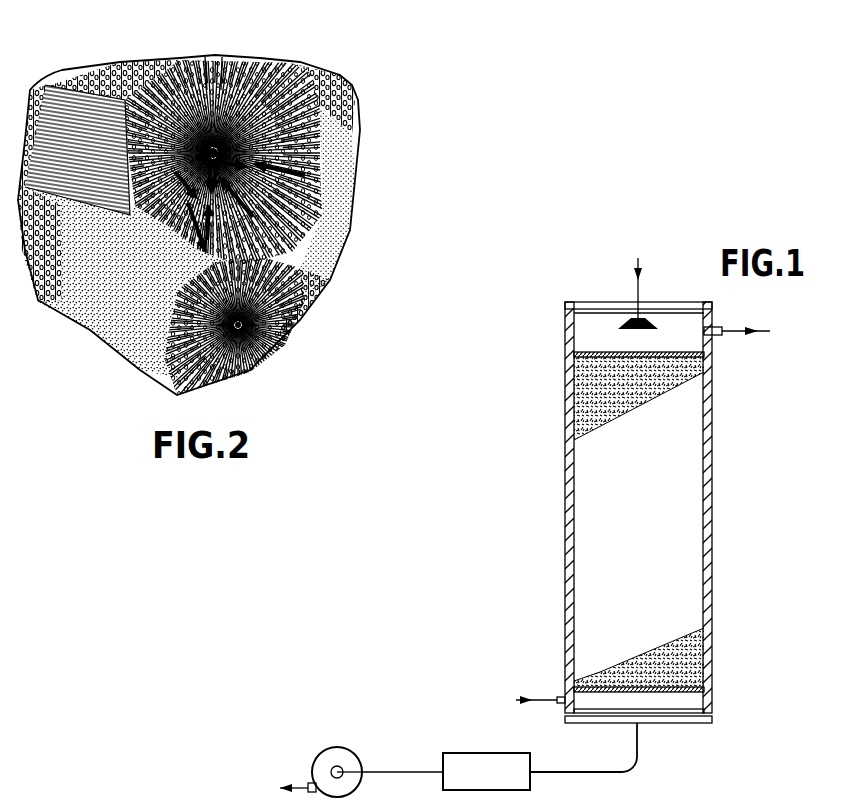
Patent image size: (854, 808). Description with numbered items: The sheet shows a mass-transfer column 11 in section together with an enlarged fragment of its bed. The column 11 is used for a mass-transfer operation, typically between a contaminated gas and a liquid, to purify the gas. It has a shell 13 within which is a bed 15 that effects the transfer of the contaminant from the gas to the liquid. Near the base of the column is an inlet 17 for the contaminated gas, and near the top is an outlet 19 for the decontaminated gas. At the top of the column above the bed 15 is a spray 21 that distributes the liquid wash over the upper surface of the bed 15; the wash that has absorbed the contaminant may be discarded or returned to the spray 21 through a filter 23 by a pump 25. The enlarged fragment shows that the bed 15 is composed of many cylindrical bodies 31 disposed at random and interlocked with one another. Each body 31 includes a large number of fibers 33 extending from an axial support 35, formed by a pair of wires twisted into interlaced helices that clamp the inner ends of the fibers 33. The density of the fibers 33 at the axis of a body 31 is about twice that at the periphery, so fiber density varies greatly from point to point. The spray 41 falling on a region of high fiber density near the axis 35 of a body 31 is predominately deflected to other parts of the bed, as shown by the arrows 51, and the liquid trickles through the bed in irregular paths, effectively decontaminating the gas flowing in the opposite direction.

In FIG. 1, the column 11 is at (622, 512).
In FIG. 1, the shell 13 is at (566, 515).
In FIG. 2, the bed 15 is at (203, 421).
In FIG. 1, the bed 15 is at (648, 419).
In FIG. 1, the inlet 17 is at (562, 697).
In FIG. 1, the outlet 19 is at (714, 333).
In FIG. 1, the spray 21 is at (630, 330).
In FIG. 1, the filter 23 is at (490, 753).
In FIG. 1, the pump 25 is at (336, 758).
In FIG. 2, the cylindrical body 31 is at (355, 165).
In FIG. 2, the fibers 33 is at (223, 56).
In FIG. 2, the axial support 35 is at (212, 155).
In FIG. 2, the spray 41 is at (298, 76).
In FIG. 2, the arrows 51 is at (173, 250).